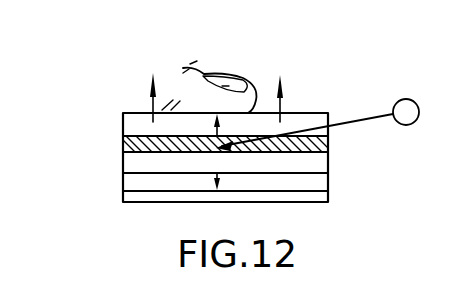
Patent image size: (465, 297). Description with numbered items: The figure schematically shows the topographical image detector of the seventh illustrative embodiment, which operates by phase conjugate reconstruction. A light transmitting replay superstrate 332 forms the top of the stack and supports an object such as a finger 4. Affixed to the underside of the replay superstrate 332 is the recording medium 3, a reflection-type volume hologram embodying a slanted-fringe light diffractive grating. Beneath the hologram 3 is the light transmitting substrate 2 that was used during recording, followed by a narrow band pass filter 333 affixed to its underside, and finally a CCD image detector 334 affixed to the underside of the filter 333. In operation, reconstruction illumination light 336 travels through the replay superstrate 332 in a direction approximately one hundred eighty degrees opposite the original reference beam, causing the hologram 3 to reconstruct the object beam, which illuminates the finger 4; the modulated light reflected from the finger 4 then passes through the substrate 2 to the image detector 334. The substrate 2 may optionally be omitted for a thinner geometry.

The replay superstrate 332 is at (126, 125).
The recording medium 3 is at (124, 144).
The light transmitting substrate 2 is at (136, 167).
The narrow band pass filter 333 is at (136, 184).
The CCD image detector 334 is at (131, 203).
The reconstruction illumination light 336 is at (398, 106).
The finger 4 is at (249, 84).